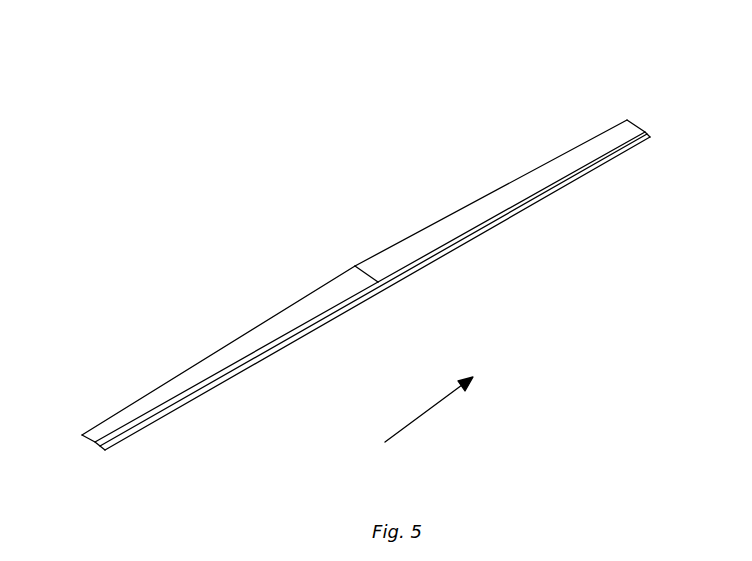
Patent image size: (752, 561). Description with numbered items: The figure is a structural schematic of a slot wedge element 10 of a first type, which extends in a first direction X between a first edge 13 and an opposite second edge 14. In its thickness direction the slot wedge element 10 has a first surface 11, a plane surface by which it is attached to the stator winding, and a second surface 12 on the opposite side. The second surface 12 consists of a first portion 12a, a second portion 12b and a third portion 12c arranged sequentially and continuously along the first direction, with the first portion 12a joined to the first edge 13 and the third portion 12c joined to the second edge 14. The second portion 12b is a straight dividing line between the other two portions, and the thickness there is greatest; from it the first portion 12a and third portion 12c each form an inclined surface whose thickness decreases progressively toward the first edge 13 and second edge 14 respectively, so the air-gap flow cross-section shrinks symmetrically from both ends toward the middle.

The slot wedge element 10 is at (385, 77).
The first surface 11 is at (343, 313).
The second surface 12 is at (348, 253).
The first portion 12a is at (212, 370).
The second portion 12b is at (368, 267).
The third portion 12c is at (475, 218).
The first edge 13 is at (108, 433).
The second edge 14 is at (642, 129).